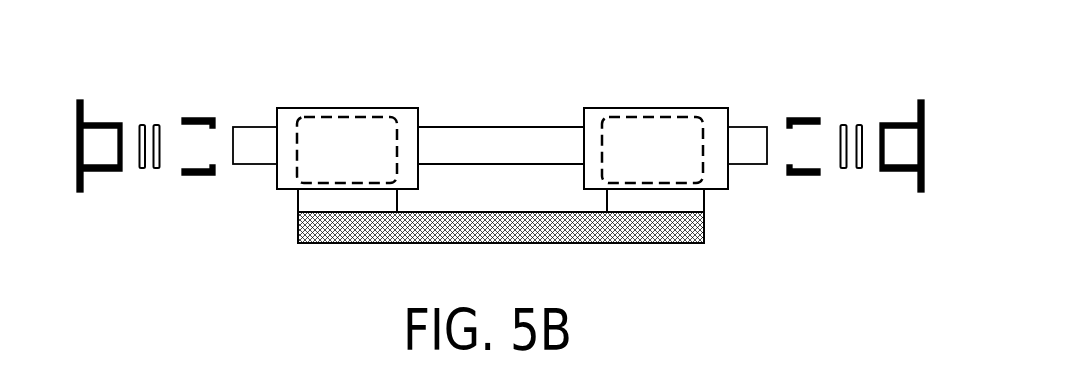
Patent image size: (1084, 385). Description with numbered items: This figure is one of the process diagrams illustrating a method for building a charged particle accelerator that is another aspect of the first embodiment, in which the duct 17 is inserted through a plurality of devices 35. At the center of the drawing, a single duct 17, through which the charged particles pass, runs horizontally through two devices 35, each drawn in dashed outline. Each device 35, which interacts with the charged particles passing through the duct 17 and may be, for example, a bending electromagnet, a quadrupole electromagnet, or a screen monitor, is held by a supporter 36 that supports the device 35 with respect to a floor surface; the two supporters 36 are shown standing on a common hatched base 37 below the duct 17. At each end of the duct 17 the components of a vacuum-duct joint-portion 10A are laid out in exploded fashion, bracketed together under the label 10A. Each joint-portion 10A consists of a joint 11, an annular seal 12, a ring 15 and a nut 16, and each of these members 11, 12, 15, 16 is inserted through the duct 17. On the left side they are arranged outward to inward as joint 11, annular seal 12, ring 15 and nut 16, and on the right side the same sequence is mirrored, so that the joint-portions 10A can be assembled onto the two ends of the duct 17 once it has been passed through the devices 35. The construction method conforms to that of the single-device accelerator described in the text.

The vacuum-duct joint-portion 10A is at (67, 55).
The joint 11 is at (104, 122).
The annular seal 12 is at (141, 125).
The ring 15 is at (157, 125).
The nut 16 is at (198, 118).
The duct 17 is at (526, 127).
The device 35 is at (323, 117).
The supporter 36 is at (380, 108).
The base 37 is at (298, 226).